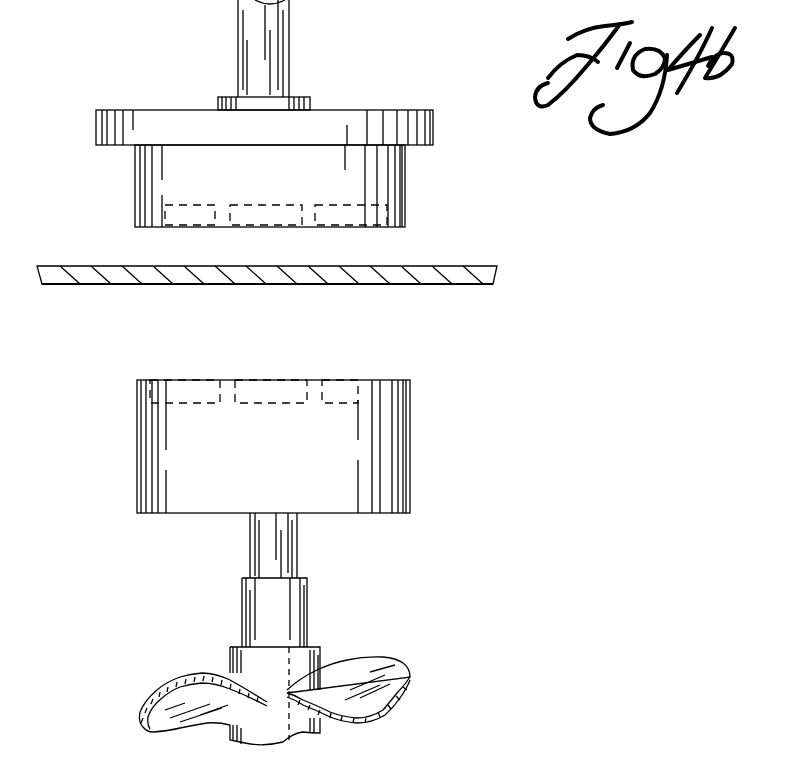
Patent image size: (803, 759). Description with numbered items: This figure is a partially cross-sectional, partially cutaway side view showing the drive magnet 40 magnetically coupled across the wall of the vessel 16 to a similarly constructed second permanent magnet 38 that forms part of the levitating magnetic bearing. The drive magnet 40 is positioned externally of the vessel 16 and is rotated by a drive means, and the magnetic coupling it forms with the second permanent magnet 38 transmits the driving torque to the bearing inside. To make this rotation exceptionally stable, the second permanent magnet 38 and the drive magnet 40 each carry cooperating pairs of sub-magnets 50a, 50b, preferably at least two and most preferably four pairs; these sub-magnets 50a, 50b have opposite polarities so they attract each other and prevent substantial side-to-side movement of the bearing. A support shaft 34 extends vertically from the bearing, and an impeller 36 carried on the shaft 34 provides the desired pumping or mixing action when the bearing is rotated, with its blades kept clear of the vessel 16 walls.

The drive magnet 40 is at (386, 187).
The sub-magnets 50a is at (138, 228).
The vessel 16 is at (493, 277).
The second permanent magnet 38 is at (388, 488).
The sub-magnets 50b is at (137, 397).
The support shaft 34 is at (290, 565).
The impeller 36 is at (407, 668).